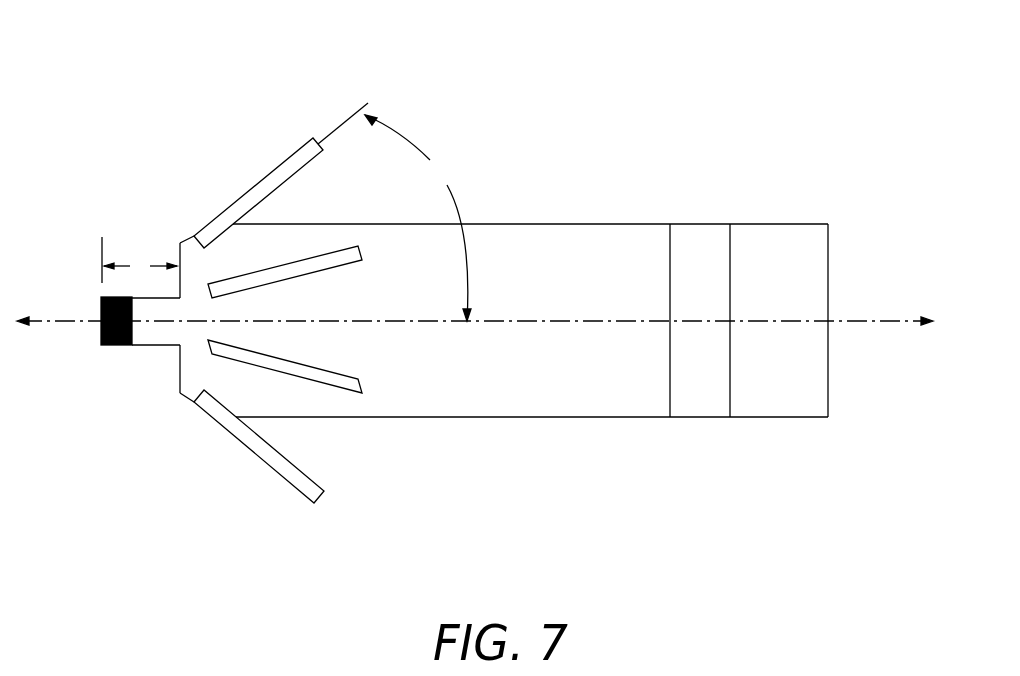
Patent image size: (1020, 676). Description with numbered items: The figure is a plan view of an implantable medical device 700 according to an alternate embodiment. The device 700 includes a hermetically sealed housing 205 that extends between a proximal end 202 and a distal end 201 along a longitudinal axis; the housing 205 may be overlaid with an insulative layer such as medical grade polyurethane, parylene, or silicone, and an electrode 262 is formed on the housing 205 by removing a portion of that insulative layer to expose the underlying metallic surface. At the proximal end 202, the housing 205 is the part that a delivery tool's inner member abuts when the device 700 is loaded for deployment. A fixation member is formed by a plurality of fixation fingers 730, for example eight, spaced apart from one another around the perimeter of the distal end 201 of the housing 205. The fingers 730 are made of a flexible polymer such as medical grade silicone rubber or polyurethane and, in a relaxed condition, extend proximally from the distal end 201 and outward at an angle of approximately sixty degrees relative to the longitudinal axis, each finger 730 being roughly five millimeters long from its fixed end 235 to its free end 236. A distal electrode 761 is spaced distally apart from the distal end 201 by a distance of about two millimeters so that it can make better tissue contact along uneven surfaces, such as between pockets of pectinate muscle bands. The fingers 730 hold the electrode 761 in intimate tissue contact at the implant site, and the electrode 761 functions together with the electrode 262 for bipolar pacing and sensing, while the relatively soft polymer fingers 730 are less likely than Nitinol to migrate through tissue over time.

The implantable medical device 700 is at (583, 92).
The proximal end 202 is at (843, 220).
The housing 205 is at (585, 295).
The electrode 262 is at (703, 399).
The distal end 201 is at (152, 410).
The head face 235 is at (200, 395).
The electrode 761 is at (102, 330).
The fixation fingers 730 is at (230, 288).
The fin end 236 is at (317, 503).